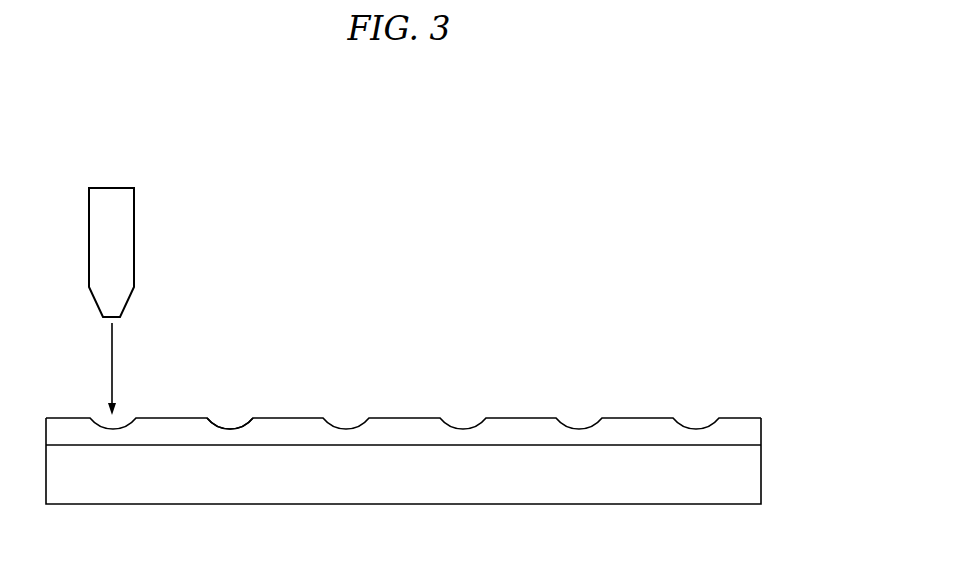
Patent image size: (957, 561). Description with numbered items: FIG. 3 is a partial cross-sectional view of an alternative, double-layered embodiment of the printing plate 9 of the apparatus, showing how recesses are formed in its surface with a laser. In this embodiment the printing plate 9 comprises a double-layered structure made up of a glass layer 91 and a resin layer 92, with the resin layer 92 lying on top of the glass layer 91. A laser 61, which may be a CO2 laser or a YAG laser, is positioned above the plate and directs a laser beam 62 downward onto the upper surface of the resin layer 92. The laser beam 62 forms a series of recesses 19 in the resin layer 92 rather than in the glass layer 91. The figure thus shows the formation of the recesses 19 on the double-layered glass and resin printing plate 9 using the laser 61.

The laser 61 is at (134, 243).
The laser beam 62 is at (112, 368).
The printing plate 9 is at (444, 461).
The resin layer 92 is at (752, 431).
The glass layer 91 is at (752, 479).
The recesses 19 is at (221, 425).